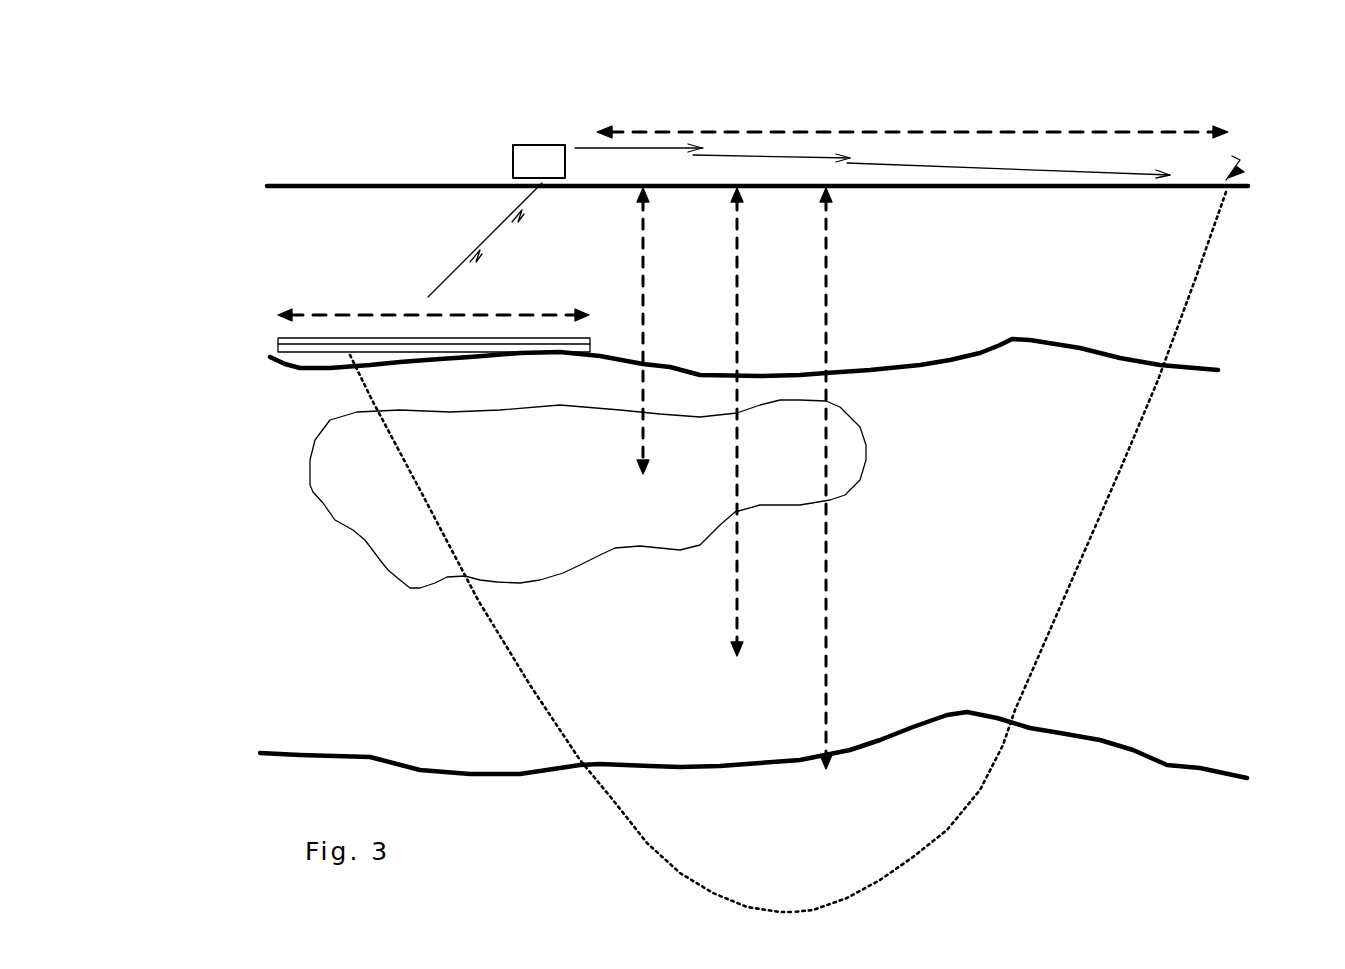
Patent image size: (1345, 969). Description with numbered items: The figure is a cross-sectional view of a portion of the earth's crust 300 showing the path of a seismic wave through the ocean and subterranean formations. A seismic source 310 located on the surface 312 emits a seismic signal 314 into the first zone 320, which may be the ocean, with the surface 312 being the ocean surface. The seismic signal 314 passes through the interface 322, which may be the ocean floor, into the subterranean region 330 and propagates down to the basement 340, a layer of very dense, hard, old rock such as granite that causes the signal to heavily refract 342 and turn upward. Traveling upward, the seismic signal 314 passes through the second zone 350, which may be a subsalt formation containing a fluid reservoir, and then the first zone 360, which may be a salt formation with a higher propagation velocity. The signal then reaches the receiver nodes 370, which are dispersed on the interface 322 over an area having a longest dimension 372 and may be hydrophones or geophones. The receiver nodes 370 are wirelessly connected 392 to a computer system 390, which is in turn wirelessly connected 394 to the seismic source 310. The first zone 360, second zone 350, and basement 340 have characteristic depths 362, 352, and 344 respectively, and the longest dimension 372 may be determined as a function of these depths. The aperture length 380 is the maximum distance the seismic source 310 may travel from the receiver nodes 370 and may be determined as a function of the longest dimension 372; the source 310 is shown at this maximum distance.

The portion of the earth's crust 300 is at (219, 126).
The seismic source 310 is at (1240, 166).
The surface 312 is at (312, 184).
The seismic signal 314 is at (1210, 240).
The first zone 320 is at (1041, 239).
The interface 322 is at (1006, 336).
The subterranean region 330 is at (1041, 418).
The basement 340 is at (753, 791).
The refraction 342 is at (806, 913).
The characteristic depth of basement 344 is at (856, 478).
The second zone 350 is at (586, 664).
The characteristic depth of second zone 352 is at (766, 422).
The first zone 360 is at (588, 494).
The characteristic depth of first zone 362 is at (671, 331).
The receiver nodes 370 is at (276, 345).
The longest dimension 372 is at (433, 305).
The aperture length 380 is at (912, 121).
The computer system 390 is at (530, 144).
The wireless connection 392 is at (500, 242).
The wireless connection 394 is at (632, 151).